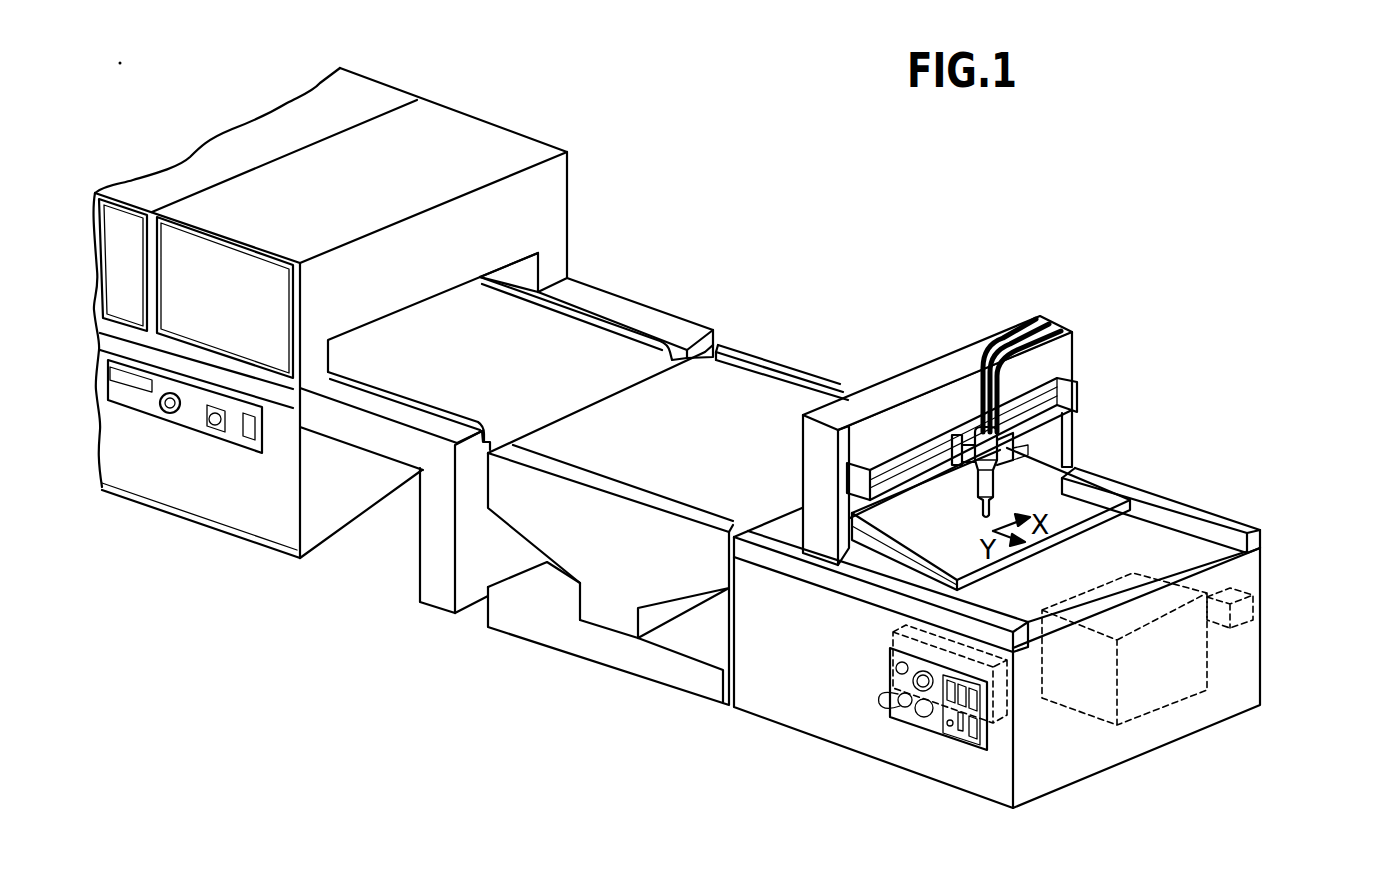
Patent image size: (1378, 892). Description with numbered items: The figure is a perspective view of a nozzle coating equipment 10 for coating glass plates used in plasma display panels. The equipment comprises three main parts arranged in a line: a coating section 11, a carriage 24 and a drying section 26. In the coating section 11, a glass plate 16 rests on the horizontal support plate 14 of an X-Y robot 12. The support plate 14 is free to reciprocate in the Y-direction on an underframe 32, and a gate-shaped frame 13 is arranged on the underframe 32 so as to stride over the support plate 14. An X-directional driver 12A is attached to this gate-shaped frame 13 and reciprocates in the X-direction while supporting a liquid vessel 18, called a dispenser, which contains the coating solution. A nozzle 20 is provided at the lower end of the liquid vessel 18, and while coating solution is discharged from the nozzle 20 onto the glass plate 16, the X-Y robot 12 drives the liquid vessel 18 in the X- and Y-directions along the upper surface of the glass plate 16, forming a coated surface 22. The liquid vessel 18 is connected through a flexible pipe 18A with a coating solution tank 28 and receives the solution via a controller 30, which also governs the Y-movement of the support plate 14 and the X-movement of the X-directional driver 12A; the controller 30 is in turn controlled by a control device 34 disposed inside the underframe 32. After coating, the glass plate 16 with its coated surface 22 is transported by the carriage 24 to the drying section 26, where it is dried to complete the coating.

The nozzle coating equipment 10 is at (602, 696).
The coating section 11 is at (1193, 439).
The X-Y robot 12 is at (893, 392).
The X-directional driver 12A is at (880, 453).
The gate-shaped frame 13 is at (812, 500).
The support plate 14 is at (1157, 515).
The glass plate 16 is at (937, 565).
The liquid vessel 18 is at (1048, 447).
The flexible pipe 18A is at (975, 375).
The nozzle 20 is at (990, 513).
The coated surface 22 is at (887, 543).
The carriage 24 is at (756, 341).
The drying section 26 is at (525, 131).
The coating solution tank 28 is at (1177, 707).
The controller 30 is at (1257, 593).
The underframe 32 is at (1118, 748).
The control device 34 is at (1007, 727).